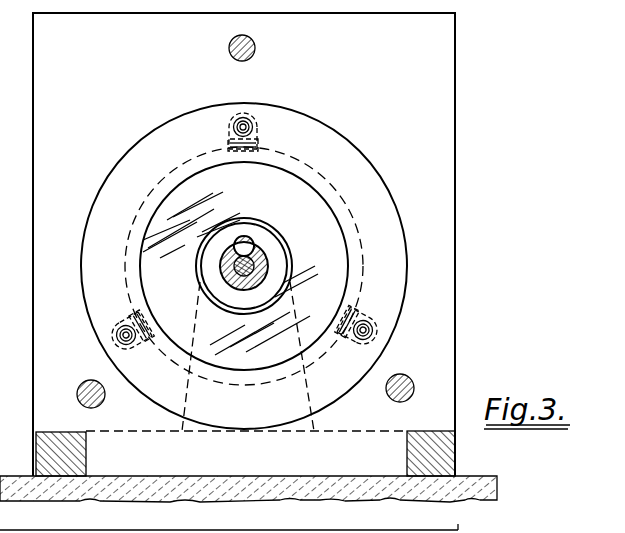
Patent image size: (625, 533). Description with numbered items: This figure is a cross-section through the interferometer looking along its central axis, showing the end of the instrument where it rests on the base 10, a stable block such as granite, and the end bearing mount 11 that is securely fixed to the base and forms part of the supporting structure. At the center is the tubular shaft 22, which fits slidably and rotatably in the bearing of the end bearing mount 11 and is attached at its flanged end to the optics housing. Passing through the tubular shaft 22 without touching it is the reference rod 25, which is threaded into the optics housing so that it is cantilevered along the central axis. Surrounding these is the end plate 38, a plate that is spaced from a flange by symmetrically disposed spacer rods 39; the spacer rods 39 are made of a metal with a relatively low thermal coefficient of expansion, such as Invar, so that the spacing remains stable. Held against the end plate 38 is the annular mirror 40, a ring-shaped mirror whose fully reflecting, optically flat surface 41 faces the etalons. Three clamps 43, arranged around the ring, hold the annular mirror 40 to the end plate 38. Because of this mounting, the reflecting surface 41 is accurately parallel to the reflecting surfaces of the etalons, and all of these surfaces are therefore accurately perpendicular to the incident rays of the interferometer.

The base 10 is at (497, 487).
The end bearing mount 11 is at (244, 267).
The tubular shaft 22 is at (234, 273).
The reference rod 25 is at (258, 246).
The end plate 38 is at (455, 66).
The spacer rods 39 is at (255, 48).
The annular mirror 40 is at (226, 266).
The reflecting surface 41 is at (328, 300).
The clamps 43 is at (258, 135).